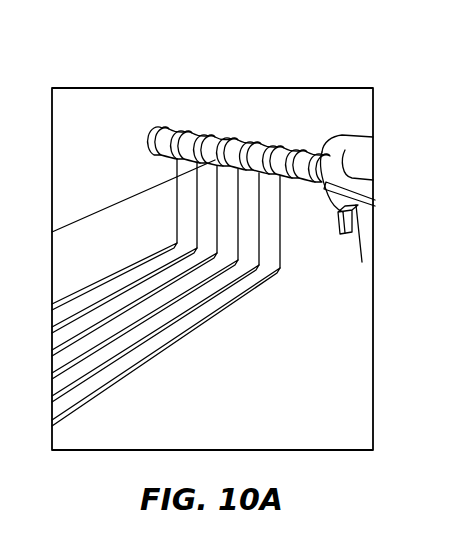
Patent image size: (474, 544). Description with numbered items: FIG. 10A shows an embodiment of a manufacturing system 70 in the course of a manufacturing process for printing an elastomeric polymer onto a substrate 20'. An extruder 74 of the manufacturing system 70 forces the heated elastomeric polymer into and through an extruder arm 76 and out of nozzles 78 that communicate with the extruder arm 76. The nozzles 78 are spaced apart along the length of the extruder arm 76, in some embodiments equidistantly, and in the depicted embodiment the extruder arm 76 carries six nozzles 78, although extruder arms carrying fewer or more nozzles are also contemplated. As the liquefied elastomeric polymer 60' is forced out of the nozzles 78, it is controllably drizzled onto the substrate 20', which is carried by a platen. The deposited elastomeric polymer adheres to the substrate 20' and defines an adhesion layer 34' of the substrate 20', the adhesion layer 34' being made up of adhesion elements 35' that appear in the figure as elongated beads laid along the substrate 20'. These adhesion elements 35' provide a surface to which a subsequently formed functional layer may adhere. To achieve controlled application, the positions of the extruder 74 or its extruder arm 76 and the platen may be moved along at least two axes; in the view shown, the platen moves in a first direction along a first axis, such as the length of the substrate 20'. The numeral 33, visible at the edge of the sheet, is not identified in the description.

The manufacturing system 70 is at (392, 92).
The extruder arm 76 is at (214, 130).
The nozzles 78 is at (168, 152).
The extruder 74 is at (355, 168).
The liquefied elastomeric polymer 60' is at (256, 244).
The adhesion elements 35' is at (166, 334).
The adhesion layer 34' is at (50, 251).
The substrate 20' is at (66, 461).
The frame 33 is at (468, 242).